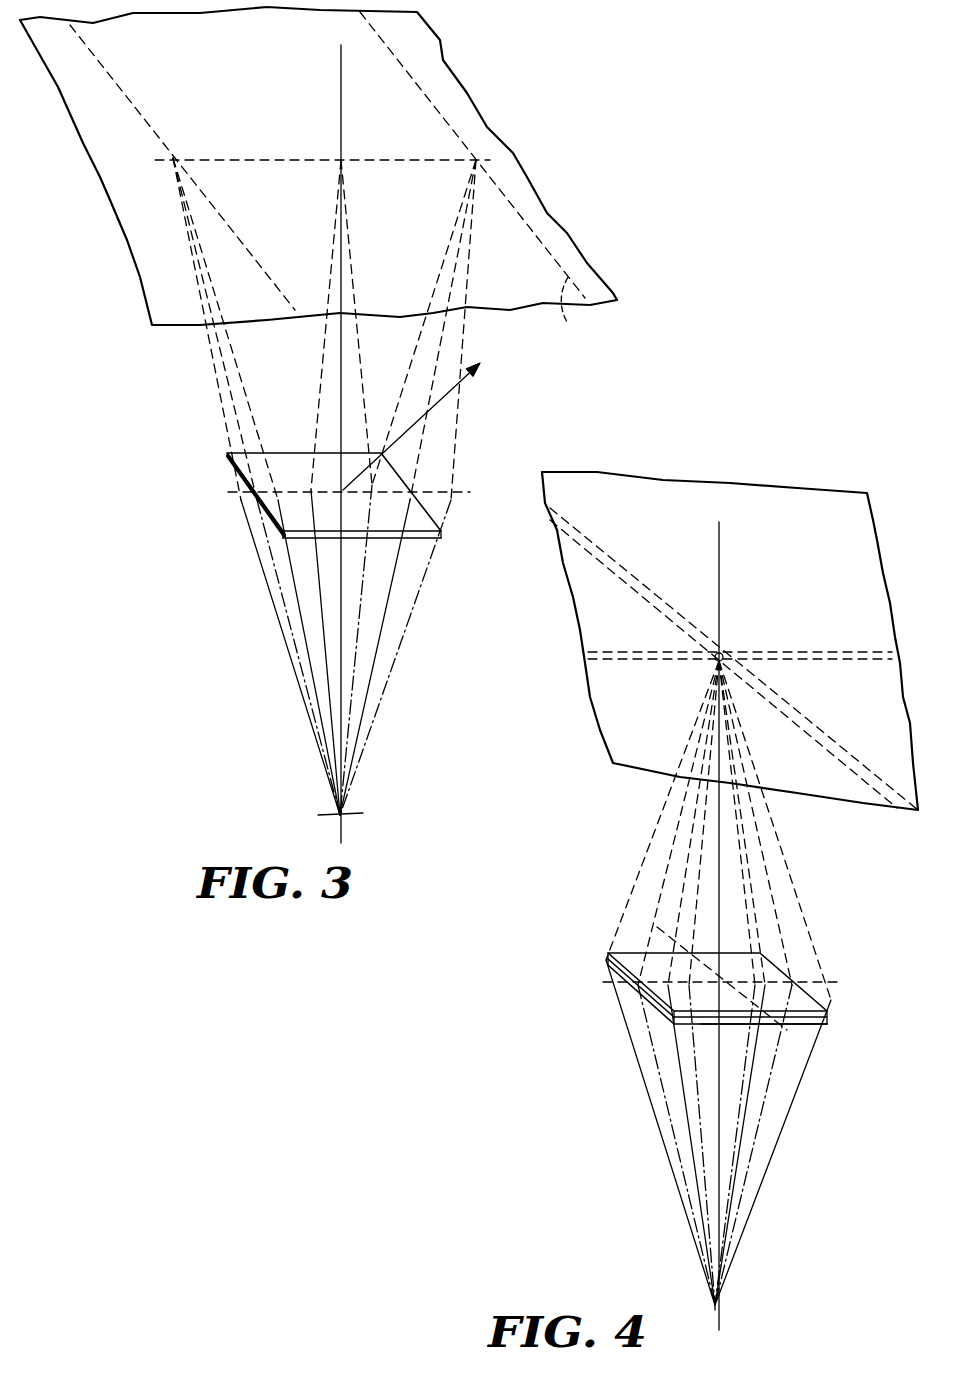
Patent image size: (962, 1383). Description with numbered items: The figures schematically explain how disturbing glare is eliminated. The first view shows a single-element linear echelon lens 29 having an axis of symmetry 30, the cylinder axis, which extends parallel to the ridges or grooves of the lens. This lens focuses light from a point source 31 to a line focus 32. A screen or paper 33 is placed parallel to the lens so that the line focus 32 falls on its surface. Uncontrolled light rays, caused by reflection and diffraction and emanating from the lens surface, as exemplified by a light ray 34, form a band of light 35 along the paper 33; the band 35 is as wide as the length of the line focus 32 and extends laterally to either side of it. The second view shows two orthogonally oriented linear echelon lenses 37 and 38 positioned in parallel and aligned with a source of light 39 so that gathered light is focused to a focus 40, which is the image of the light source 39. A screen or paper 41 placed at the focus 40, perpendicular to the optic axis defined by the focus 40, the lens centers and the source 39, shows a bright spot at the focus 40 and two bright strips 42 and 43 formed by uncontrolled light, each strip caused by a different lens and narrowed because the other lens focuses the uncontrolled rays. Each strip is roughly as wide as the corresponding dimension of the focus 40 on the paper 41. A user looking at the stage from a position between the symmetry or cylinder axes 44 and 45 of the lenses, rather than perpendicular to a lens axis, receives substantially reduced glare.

In FIG. 3, the linear echelon lens 29 is at (227, 461).
In FIG. 3, the axis of symmetry 30 is at (218, 490).
In FIG. 3, the point source 31 is at (362, 813).
In FIG. 3, the line focus 32 is at (233, 157).
In FIG. 3, the screen or paper 33 is at (527, 172).
In FIG. 3, the light ray 34 is at (460, 385).
In FIG. 3, the band of light 35 is at (583, 310).
In FIG. 4, the linear echelon lens 37 is at (608, 952).
In FIG. 4, the linear echelon lens 38 is at (606, 959).
In FIG. 4, the source of light 39 is at (720, 1308).
In FIG. 4, the focus 40 is at (724, 652).
In FIG. 4, the screen or paper 41 is at (787, 497).
In FIG. 4, the bright strip 42 is at (875, 652).
In FIG. 4, the bright strip 43 is at (855, 760).
In FIG. 4, the cylinder axis 44 is at (598, 983).
In FIG. 4, the cylinder axis 45 is at (787, 1038).